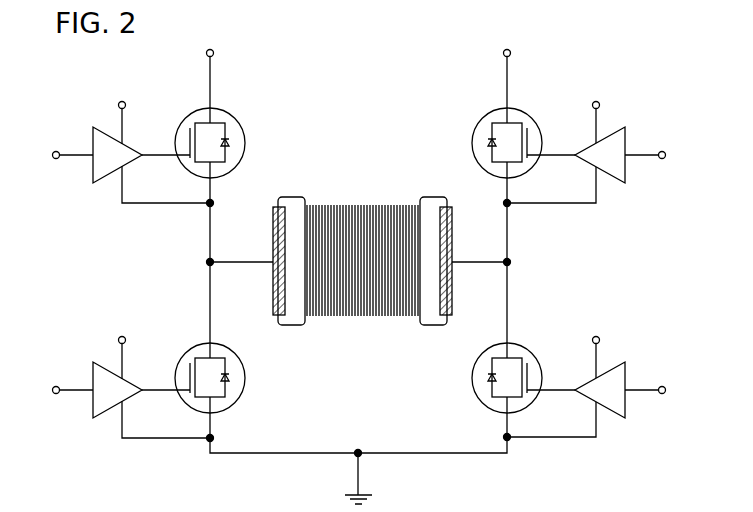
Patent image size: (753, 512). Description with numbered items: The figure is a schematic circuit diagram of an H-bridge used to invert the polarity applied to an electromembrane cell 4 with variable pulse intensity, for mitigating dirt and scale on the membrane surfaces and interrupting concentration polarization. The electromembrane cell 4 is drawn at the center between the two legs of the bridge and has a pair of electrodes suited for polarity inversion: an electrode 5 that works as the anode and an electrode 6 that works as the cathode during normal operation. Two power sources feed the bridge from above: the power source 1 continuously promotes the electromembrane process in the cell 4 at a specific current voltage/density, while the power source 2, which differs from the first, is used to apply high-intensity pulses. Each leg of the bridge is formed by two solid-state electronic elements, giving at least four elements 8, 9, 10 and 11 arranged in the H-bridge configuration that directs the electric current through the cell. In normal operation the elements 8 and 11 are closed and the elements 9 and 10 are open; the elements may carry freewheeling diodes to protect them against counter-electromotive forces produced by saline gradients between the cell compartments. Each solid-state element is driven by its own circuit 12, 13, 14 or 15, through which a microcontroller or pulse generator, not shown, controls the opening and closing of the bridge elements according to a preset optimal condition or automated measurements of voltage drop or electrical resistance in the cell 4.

The power source 1 is at (222, 54).
The power source 2 is at (496, 52).
The electromembrane cell 4 is at (356, 323).
The electrode (anode) 5 is at (272, 278).
The electrode (cathode) 6 is at (452, 232).
The solid-state electronic element 8 is at (240, 107).
The solid-state electronic element 9 is at (238, 406).
The solid-state electronic element 10 is at (480, 108).
The solid-state electronic element 11 is at (482, 406).
The circuit 12 is at (108, 118).
The circuit 13 is at (612, 118).
The circuit 14 is at (108, 352).
The circuit 15 is at (612, 354).